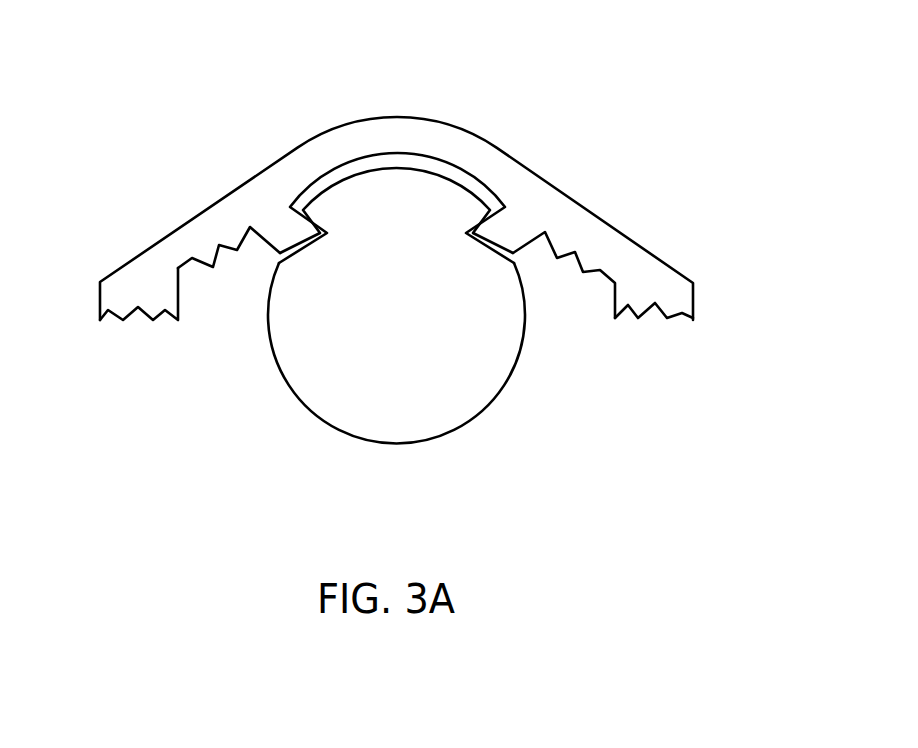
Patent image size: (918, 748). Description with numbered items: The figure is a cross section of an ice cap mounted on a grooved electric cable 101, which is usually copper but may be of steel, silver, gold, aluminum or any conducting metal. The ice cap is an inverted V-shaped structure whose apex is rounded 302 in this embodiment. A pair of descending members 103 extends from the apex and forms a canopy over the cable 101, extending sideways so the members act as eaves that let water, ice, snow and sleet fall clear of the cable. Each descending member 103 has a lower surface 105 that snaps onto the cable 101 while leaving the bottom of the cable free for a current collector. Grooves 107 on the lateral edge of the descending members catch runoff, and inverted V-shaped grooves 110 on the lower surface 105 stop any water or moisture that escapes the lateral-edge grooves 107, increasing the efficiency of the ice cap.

The rounded apex 302 is at (407, 113).
The descending members 103 is at (215, 232).
The grooves on the lateral edge 107 is at (138, 307).
The lower surface 105 is at (223, 298).
The inverted V-shaped grooves 110 is at (582, 270).
The grooved electric cable 101 is at (413, 308).